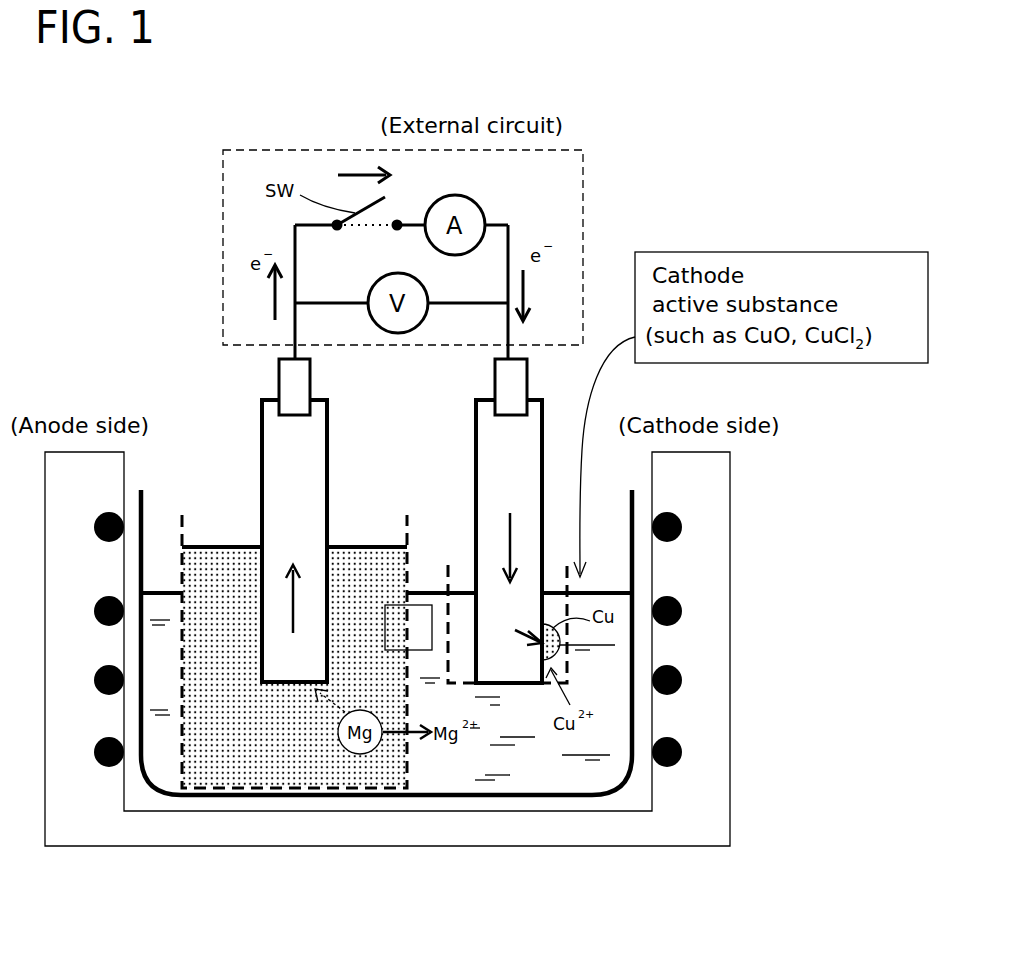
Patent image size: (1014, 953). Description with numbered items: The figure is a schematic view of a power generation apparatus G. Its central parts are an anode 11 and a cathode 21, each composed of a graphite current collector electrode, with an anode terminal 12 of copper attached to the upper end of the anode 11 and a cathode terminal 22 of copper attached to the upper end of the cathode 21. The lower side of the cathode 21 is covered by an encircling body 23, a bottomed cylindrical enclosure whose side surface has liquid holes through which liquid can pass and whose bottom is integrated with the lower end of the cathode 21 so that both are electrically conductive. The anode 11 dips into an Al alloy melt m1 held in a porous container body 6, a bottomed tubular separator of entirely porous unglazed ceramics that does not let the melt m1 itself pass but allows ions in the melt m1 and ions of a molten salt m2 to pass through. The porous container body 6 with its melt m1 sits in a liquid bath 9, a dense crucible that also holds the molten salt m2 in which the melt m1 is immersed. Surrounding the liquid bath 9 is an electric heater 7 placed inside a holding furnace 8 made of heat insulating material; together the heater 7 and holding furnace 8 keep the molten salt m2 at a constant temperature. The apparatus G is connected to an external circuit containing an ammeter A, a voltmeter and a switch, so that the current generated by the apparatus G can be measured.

The porous container body 6 is at (410, 758).
The heater 7 is at (683, 677).
The holding furnace 8 is at (718, 730).
The liquid bath 9 is at (608, 793).
The anode 11 is at (272, 470).
The anode terminal 12 is at (278, 381).
The cathode 21 is at (487, 470).
The cathode terminal 22 is at (495, 381).
The encircling body 23 is at (447, 575).
The Al alloy melt m1 is at (300, 795).
The molten salt m2 is at (535, 778).
The ammeter A is at (395, 605).
The power generation apparatus G is at (793, 843).